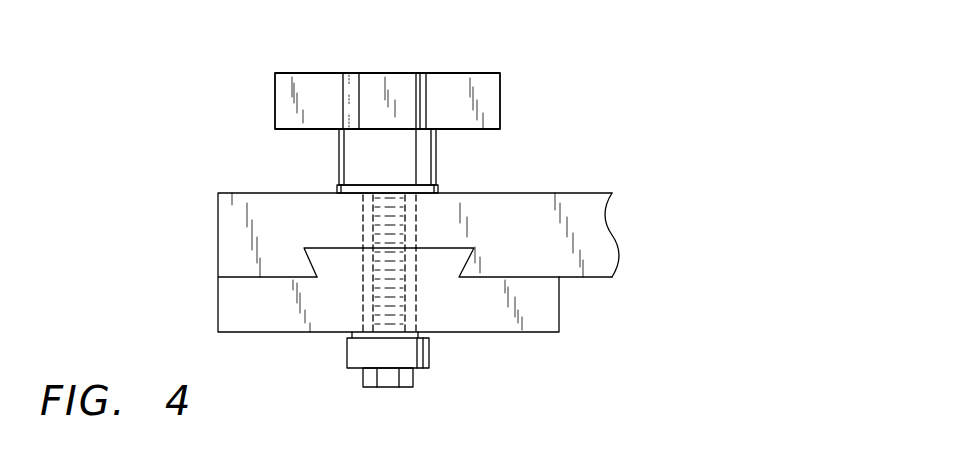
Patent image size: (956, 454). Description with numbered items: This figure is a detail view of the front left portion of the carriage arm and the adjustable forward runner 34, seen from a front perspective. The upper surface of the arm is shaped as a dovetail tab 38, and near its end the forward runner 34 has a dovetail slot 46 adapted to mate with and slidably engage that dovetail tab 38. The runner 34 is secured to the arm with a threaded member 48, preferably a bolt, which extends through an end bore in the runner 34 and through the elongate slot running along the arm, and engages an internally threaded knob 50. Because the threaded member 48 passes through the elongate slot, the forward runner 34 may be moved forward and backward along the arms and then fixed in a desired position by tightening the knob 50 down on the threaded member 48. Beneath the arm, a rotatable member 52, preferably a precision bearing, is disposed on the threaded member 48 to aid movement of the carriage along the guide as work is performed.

The forward runner 34 is at (232, 205).
The dovetail tab 38 is at (348, 273).
The dovetail slot 46 is at (440, 246).
The threaded member 48 is at (392, 380).
The knob 50 is at (482, 72).
The rotatable member 52 is at (358, 360).